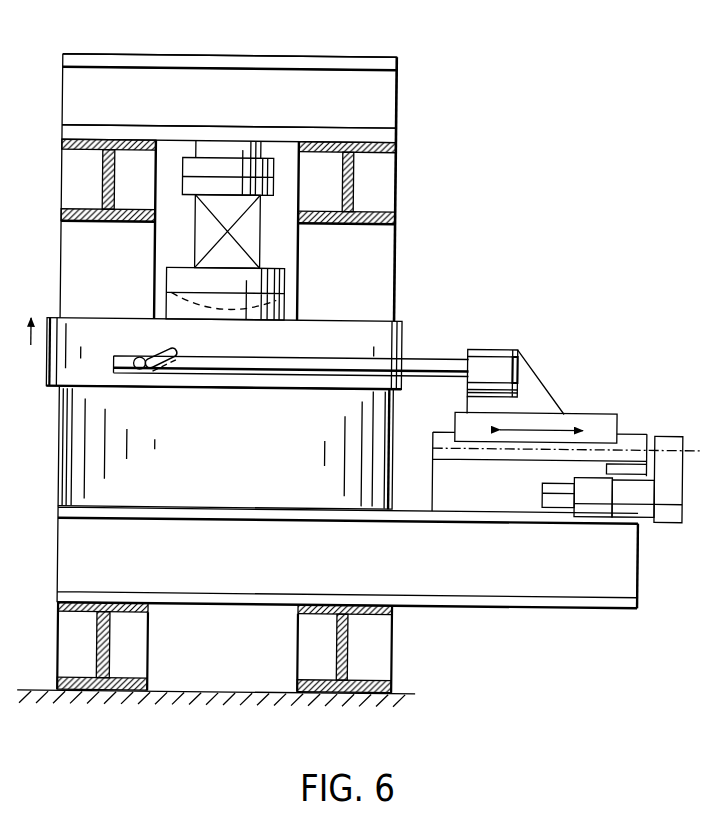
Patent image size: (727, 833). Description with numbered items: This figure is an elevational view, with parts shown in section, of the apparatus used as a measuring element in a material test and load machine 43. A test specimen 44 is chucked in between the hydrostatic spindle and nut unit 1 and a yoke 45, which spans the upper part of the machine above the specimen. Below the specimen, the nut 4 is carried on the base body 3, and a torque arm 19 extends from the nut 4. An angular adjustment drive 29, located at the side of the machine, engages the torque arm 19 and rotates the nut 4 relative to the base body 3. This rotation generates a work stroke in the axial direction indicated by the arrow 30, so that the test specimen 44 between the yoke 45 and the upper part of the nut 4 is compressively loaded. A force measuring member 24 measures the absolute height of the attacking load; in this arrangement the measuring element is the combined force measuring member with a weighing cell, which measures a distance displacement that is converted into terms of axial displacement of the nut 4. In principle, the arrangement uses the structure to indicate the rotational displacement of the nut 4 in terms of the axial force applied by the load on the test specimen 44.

The hydrostatic spindle and nut unit 1 is at (62, 446).
The base body 3 is at (268, 467).
The nut 4 is at (396, 345).
The torque arm 19 is at (160, 348).
The force measuring member 24 is at (503, 352).
The angular adjustment drive 29 is at (531, 440).
The arrow 30 is at (30, 350).
The material test and load machine 43 is at (420, 250).
The test specimen 44 is at (206, 229).
The yoke 45 is at (293, 88).